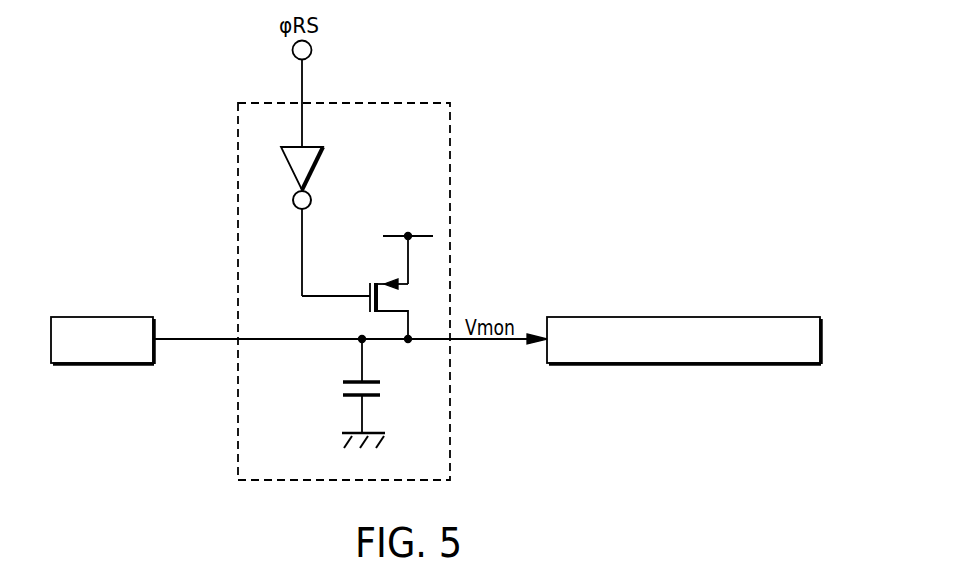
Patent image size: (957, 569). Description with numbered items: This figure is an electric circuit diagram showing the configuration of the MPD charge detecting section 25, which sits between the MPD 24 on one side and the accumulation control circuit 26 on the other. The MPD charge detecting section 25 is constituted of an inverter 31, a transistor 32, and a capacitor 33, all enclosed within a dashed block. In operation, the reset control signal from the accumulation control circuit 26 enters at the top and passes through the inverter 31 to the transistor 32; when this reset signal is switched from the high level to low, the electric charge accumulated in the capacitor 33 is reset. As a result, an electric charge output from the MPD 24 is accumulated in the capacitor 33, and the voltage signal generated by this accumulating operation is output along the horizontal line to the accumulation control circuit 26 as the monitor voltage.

The MPD 24 is at (110, 316).
The MPD charge detecting section 25 is at (452, 128).
The accumulation control circuit 26 is at (701, 316).
The inverter 31 is at (321, 151).
The transistor 32 is at (400, 297).
The capacitor 33 is at (375, 389).